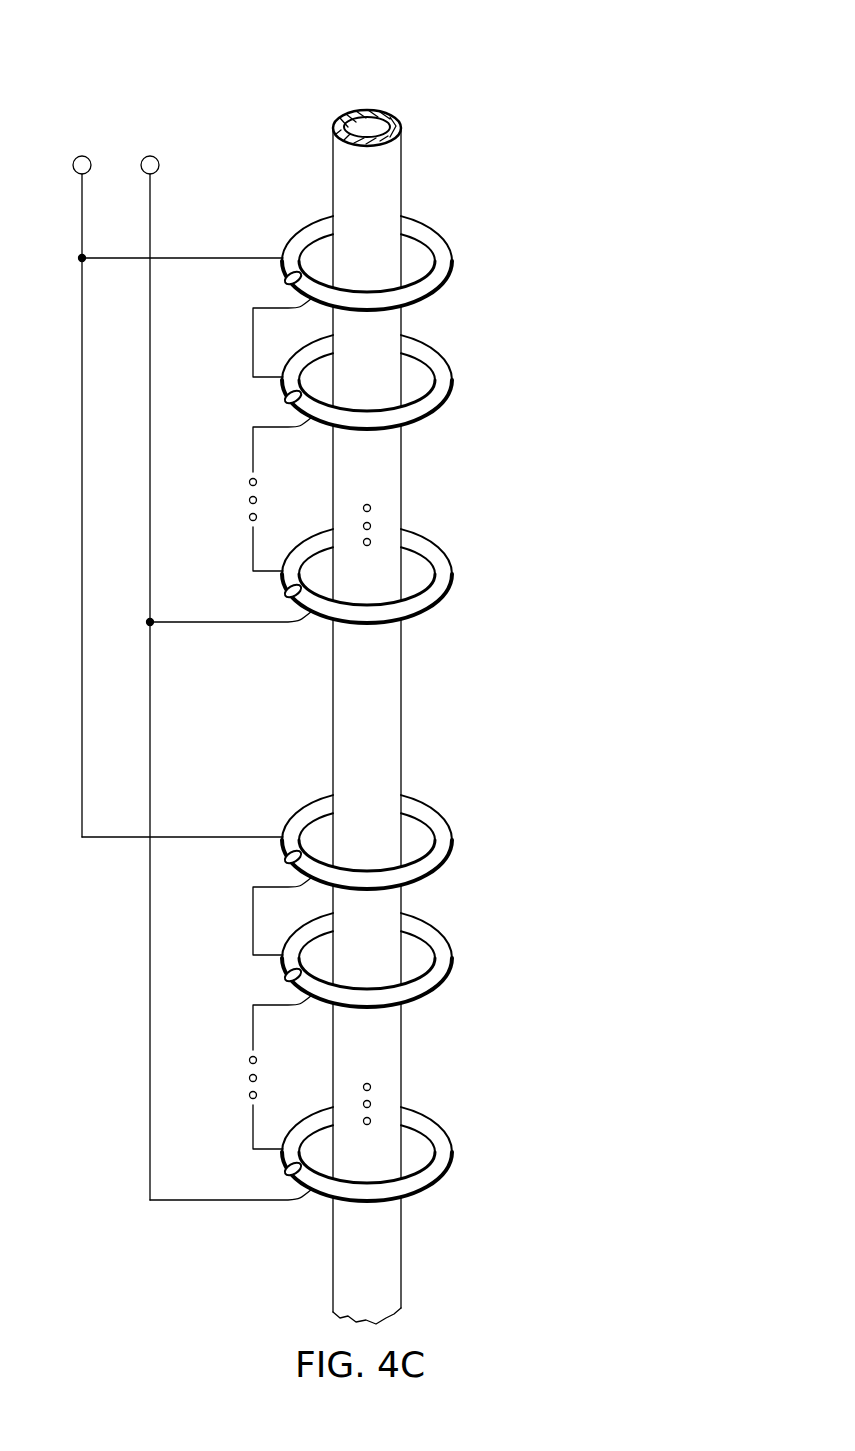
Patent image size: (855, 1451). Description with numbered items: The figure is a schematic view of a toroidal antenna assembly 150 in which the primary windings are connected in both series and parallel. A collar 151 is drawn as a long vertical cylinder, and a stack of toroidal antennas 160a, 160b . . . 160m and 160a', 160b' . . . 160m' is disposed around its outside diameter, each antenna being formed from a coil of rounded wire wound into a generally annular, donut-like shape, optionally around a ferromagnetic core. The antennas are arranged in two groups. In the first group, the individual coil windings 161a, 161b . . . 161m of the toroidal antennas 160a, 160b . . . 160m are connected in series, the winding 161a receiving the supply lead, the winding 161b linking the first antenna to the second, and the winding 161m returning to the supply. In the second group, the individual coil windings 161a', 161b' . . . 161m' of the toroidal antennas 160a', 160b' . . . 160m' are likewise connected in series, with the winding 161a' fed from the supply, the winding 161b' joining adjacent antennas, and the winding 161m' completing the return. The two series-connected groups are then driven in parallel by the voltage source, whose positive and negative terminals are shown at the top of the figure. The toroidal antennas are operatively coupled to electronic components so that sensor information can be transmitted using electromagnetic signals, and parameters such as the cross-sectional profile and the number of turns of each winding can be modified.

The toroidal antenna assembly 150 is at (198, 61).
The collar 151 is at (402, 162).
The toroidal antenna 160a is at (412, 263).
The toroidal antenna 160b is at (413, 382).
The toroidal antenna 160m is at (416, 576).
The toroidal antenna 160a' is at (415, 842).
The toroidal antenna 160b' is at (416, 960).
The toroidal antenna 160m' is at (420, 1154).
The primary winding 161a is at (182, 231).
The primary winding 161b is at (238, 337).
The primary winding 161m is at (231, 548).
The primary winding 161a' is at (182, 811).
The primary winding 161b' is at (237, 916).
The primary winding 161m' is at (231, 1126).